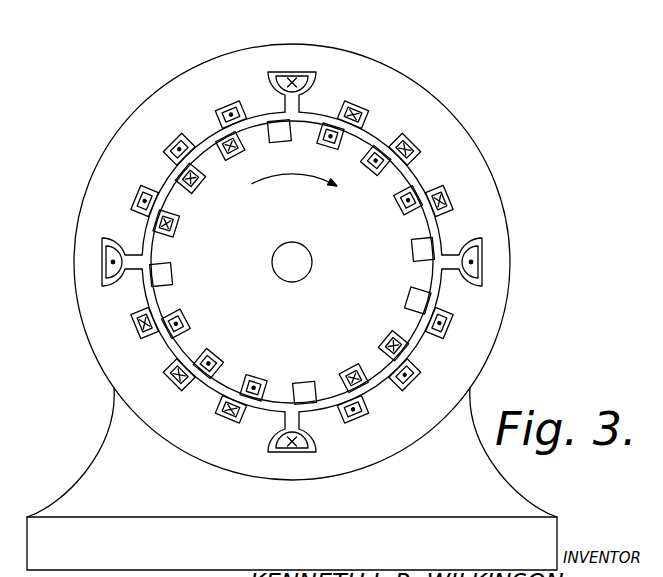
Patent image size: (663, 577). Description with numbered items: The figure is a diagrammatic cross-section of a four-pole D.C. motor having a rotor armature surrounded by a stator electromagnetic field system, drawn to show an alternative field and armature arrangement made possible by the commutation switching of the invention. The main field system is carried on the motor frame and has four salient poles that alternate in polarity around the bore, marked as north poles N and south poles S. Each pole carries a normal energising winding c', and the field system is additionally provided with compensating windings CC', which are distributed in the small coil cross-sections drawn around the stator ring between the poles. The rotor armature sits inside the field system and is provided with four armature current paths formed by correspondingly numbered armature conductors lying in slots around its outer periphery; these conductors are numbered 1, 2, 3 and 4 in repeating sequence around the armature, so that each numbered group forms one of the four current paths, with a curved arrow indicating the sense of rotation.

The normal energising windings c' is at (286, 235).
The compensating windings CC' is at (332, 241).
The south magnetic pole S is at (289, 259).
The north magnetic pole N is at (289, 260).
The coil group 1 is at (291, 261).
The coil group 2 is at (291, 261).
The coil group 3 is at (291, 261).
The coil group 4 is at (291, 261).